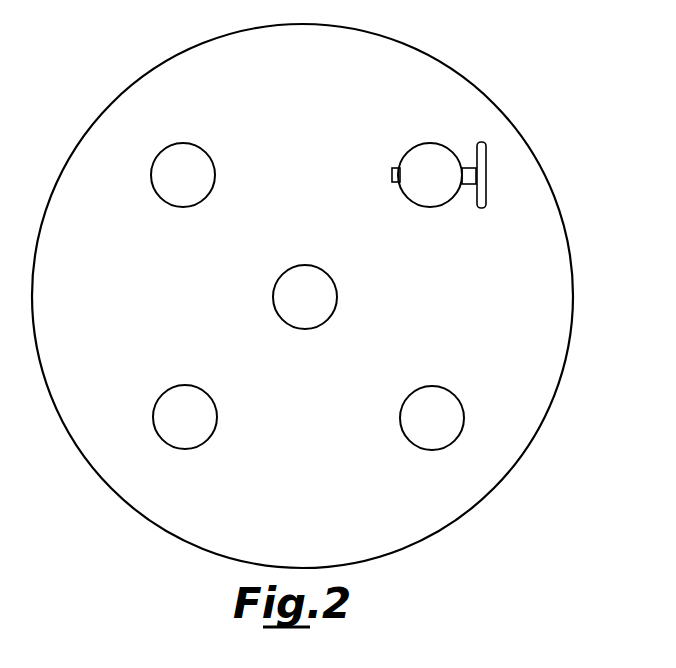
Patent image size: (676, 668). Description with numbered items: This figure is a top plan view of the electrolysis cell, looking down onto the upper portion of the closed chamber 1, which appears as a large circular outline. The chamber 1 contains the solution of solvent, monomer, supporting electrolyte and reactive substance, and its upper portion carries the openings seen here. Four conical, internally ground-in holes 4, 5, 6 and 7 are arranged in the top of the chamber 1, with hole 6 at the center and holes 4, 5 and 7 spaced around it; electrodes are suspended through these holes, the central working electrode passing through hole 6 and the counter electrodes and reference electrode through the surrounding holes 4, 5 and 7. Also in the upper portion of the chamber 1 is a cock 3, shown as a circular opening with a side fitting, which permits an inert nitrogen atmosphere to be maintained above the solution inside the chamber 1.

The closed chamber 1 is at (575, 312).
The cock 3 is at (473, 143).
The conical internally ground in hole 4 is at (208, 152).
The conical internally ground in hole 5 is at (418, 445).
The conical internally ground in hole 6 is at (337, 300).
The conical internally ground in hole 7 is at (207, 440).